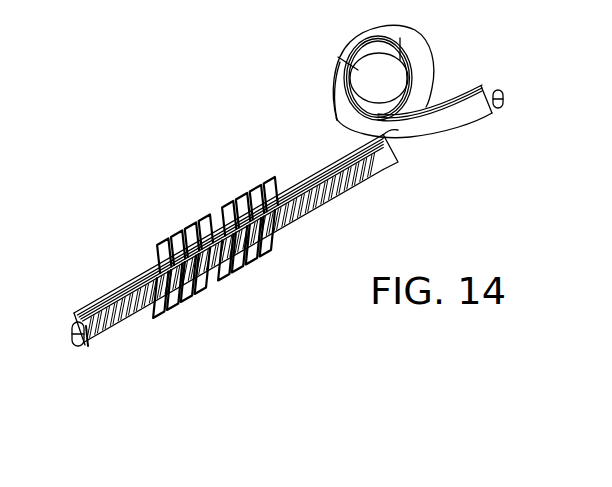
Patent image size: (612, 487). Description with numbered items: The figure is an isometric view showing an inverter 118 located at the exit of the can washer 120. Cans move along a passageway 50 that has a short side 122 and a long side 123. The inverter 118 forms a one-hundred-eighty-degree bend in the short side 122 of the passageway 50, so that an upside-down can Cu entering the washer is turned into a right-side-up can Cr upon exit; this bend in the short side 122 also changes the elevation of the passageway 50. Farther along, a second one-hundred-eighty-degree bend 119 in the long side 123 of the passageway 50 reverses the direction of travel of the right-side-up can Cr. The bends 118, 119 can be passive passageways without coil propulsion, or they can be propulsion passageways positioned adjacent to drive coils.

The passageway 50 is at (85, 350).
The inverter 118 is at (418, 46).
The second 180° bend 119 is at (343, 103).
The can washer 120 is at (290, 184).
The short side 122 is at (385, 136).
The long side 123 is at (458, 128).
The upside-down can Cu is at (71, 332).
The right-side-up can Cr is at (503, 106).